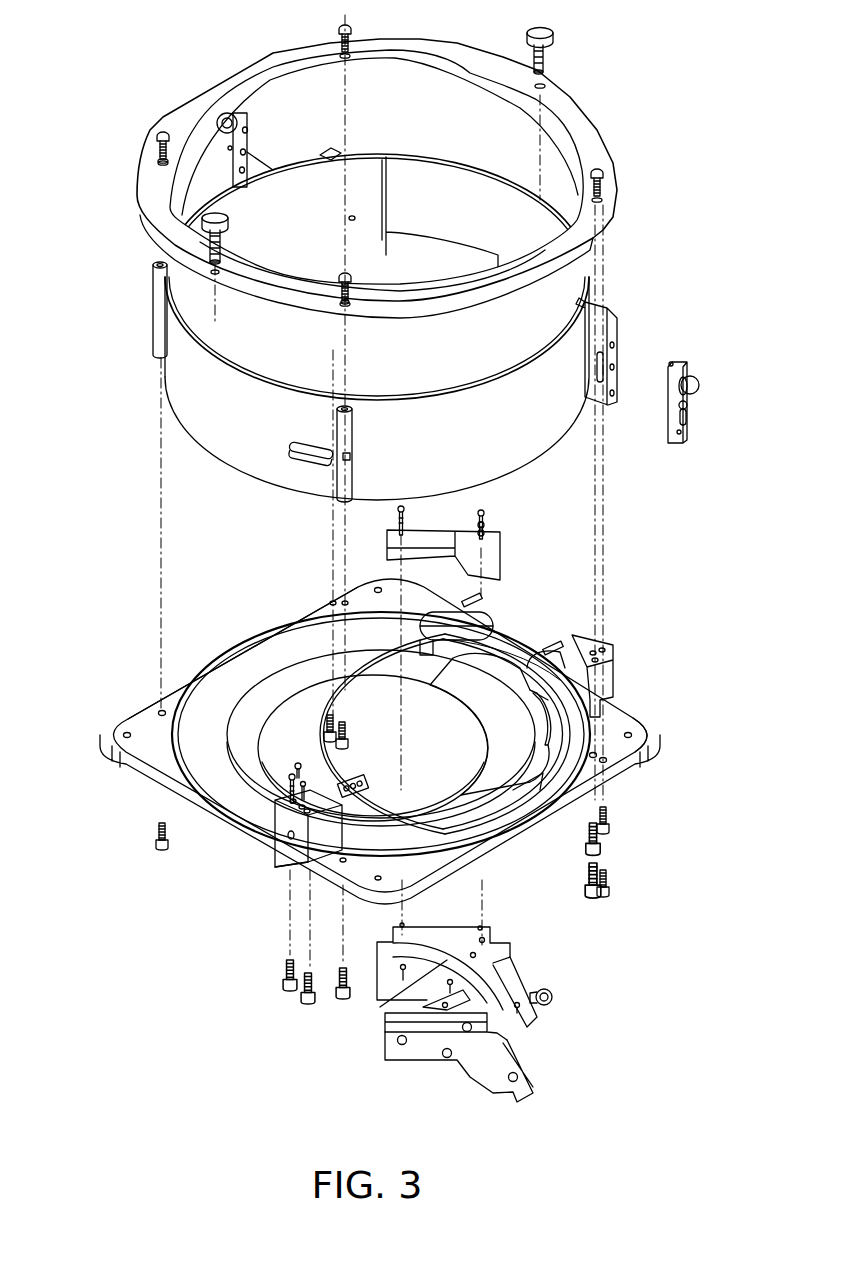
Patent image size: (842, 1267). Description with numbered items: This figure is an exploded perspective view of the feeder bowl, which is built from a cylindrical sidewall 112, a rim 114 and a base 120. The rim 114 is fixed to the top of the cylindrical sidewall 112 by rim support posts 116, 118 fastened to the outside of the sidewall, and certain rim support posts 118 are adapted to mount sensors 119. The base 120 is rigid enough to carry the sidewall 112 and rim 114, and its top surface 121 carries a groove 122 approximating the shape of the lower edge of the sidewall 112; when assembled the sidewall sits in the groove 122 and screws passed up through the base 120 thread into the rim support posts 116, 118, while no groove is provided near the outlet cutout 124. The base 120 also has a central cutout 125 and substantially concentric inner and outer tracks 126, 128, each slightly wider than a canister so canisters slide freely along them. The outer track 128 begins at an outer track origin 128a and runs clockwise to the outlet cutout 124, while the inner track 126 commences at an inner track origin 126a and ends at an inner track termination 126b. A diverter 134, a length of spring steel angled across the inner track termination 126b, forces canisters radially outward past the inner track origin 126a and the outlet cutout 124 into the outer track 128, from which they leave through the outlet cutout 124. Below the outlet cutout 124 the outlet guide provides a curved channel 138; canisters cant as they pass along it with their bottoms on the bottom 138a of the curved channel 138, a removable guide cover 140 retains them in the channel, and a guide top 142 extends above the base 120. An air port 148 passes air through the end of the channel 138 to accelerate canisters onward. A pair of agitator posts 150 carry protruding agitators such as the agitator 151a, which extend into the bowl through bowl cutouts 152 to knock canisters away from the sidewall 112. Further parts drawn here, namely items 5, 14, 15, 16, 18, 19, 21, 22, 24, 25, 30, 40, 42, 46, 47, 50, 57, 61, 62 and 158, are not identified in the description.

The upper assembly 5 is at (430, 178).
The rim 114 is at (573, 112).
The knob bolt 57 is at (553, 33).
The screw 47 is at (603, 173).
The internal bracket 14 is at (327, 153).
The cylindrical sidewall 112 is at (303, 327).
The drum wall 19 is at (170, 398).
The bowl cutout 152 is at (300, 445).
The rim support post 116 is at (153, 280).
The rim support post 118 is at (613, 313).
The latch bracket 62 is at (731, 417).
The knob 50 is at (693, 382).
The sensor 119 is at (697, 412).
The fastener 15 is at (683, 367).
The bracket 18 is at (493, 562).
The pin 40 is at (483, 510).
The base 24 is at (384, 741).
The base 120 is at (135, 750).
The groove 122 is at (135, 706).
The top surface 121 is at (632, 715).
The central cutout 125 is at (290, 740).
The outlet cutout 124 is at (490, 612).
The turntable ring 25 is at (248, 638).
The diverter 134 is at (320, 672).
The inner track termination 126b is at (394, 626).
The inner ring 61 is at (340, 655).
The guide top 142 is at (500, 578).
The outer track 128 is at (573, 755).
The inner track 126 is at (605, 780).
The inner track origin 126a is at (530, 655).
The outer track origin 128a is at (580, 695).
The agitator post 150 is at (613, 657).
The hole 30 is at (287, 837).
The block face 16 is at (300, 847).
The agitator 151a is at (350, 805).
The screw 158 is at (205, 840).
The screws 42 is at (612, 882).
The curved channel 138 is at (456, 1031).
The bottom of the curved channel 138a is at (445, 975).
The arm 21 is at (537, 1020).
The air port 148 is at (552, 997).
The lower bar 22 is at (403, 1056).
The hole 46 is at (390, 1040).
The guide cover 140 is at (477, 1060).